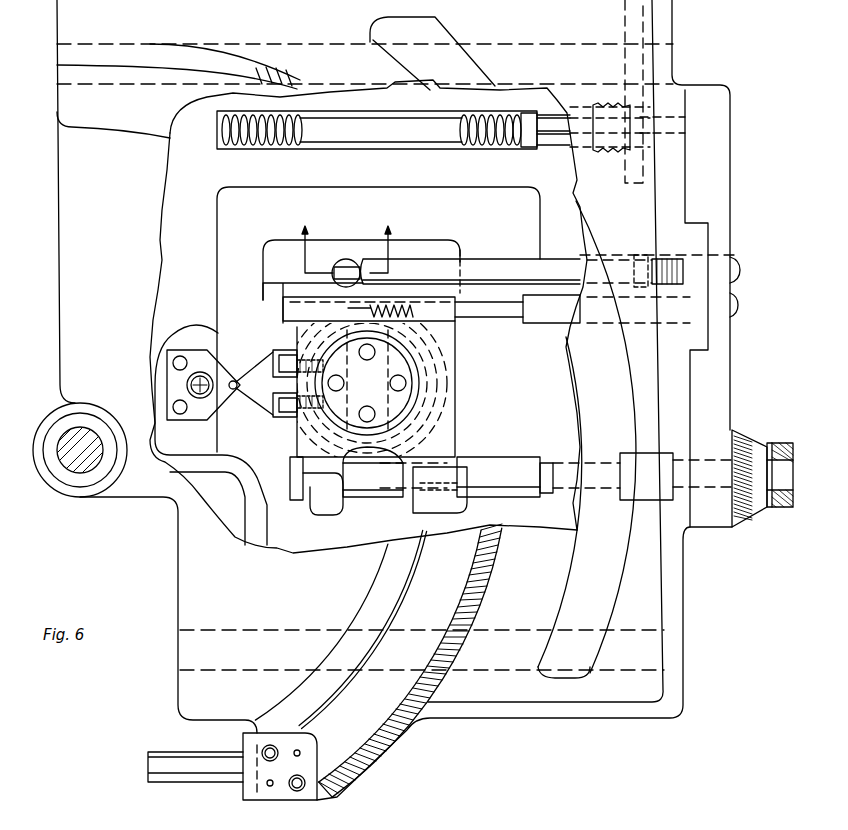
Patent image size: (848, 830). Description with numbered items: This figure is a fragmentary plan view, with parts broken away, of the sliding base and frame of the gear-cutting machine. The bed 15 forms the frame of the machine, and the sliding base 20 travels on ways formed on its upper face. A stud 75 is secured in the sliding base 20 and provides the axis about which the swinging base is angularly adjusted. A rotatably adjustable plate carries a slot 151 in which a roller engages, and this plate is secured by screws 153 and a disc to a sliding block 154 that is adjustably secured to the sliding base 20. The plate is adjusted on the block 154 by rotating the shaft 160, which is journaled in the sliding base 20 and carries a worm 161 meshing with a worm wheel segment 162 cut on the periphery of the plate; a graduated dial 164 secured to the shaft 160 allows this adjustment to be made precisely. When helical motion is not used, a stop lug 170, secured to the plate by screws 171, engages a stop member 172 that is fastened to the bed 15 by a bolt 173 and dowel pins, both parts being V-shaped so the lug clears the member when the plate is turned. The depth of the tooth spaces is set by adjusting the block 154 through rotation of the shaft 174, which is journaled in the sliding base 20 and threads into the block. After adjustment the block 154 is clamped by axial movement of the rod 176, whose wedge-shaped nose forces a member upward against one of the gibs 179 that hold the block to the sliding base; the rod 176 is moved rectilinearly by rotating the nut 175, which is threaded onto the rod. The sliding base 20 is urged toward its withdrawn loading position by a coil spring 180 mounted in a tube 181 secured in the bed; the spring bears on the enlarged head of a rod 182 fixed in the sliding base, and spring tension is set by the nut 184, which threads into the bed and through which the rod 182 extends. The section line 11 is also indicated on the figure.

The section line 11 is at (348, 247).
The bed 15 is at (205, 245).
The sliding base 20 is at (570, 695).
The stud 75 is at (70, 472).
The slot 151 is at (404, 408).
The screws 153 is at (405, 385).
The sliding block 154 is at (453, 332).
The shaft 160 is at (550, 457).
The worm 161 is at (377, 500).
The worm wheel segment 162 is at (423, 447).
The graduated dial 164 is at (753, 510).
The stop lug 170 is at (264, 400).
The screws 171 is at (277, 350).
The stop member 172 is at (228, 358).
The bolt 173 is at (195, 383).
The shaft 174 is at (510, 312).
The nut 175 is at (737, 257).
The rod 176 is at (500, 273).
The gibs 179 is at (322, 248).
The coil spring 180 is at (278, 150).
The tube 181 is at (394, 150).
The rod 182 is at (558, 133).
The nut 184 is at (613, 150).